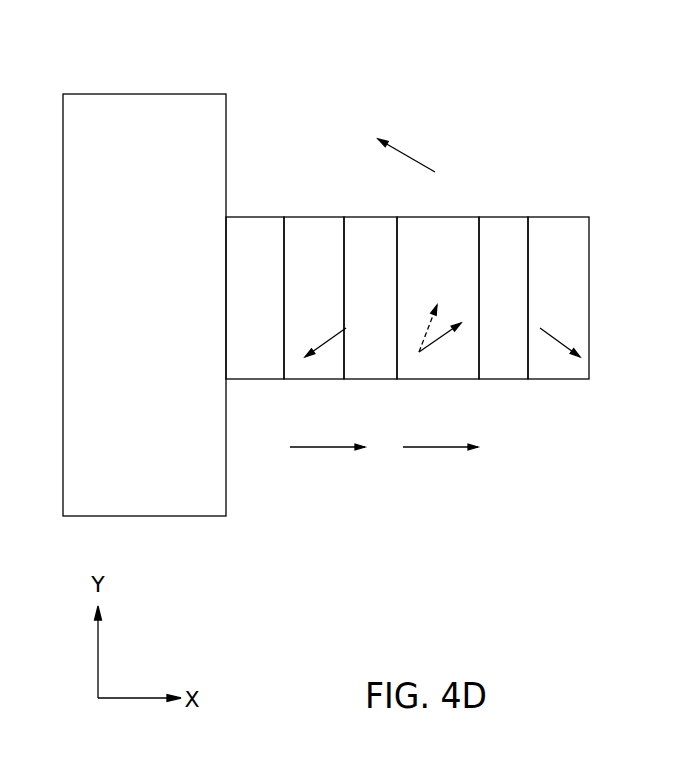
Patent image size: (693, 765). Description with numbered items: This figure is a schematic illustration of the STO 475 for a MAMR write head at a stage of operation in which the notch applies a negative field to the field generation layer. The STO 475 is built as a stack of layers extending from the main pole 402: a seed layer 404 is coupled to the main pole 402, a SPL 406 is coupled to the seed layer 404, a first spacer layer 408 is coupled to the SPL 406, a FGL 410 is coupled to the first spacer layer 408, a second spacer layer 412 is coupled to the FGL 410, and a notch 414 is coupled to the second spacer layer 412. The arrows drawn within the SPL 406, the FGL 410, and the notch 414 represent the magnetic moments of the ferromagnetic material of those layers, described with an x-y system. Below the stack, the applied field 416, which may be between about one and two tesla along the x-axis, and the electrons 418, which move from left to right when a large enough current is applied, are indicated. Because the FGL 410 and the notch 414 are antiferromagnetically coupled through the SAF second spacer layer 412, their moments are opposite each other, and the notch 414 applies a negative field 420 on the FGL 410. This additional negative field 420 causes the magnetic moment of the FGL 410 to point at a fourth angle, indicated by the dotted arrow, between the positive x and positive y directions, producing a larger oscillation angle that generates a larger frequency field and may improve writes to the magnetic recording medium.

The main pole 402 is at (121, 318).
The seed layer 404 is at (233, 280).
The SPL 406 is at (297, 280).
The first spacer layer 408 is at (352, 280).
The FGL 410 is at (416, 280).
The second spacer layer 412 is at (523, 280).
The notch 414 is at (538, 280).
The applied field 416 is at (440, 447).
The electrons 418 is at (327, 447).
The negative field 420 is at (417, 161).
The STO 475 is at (578, 77).